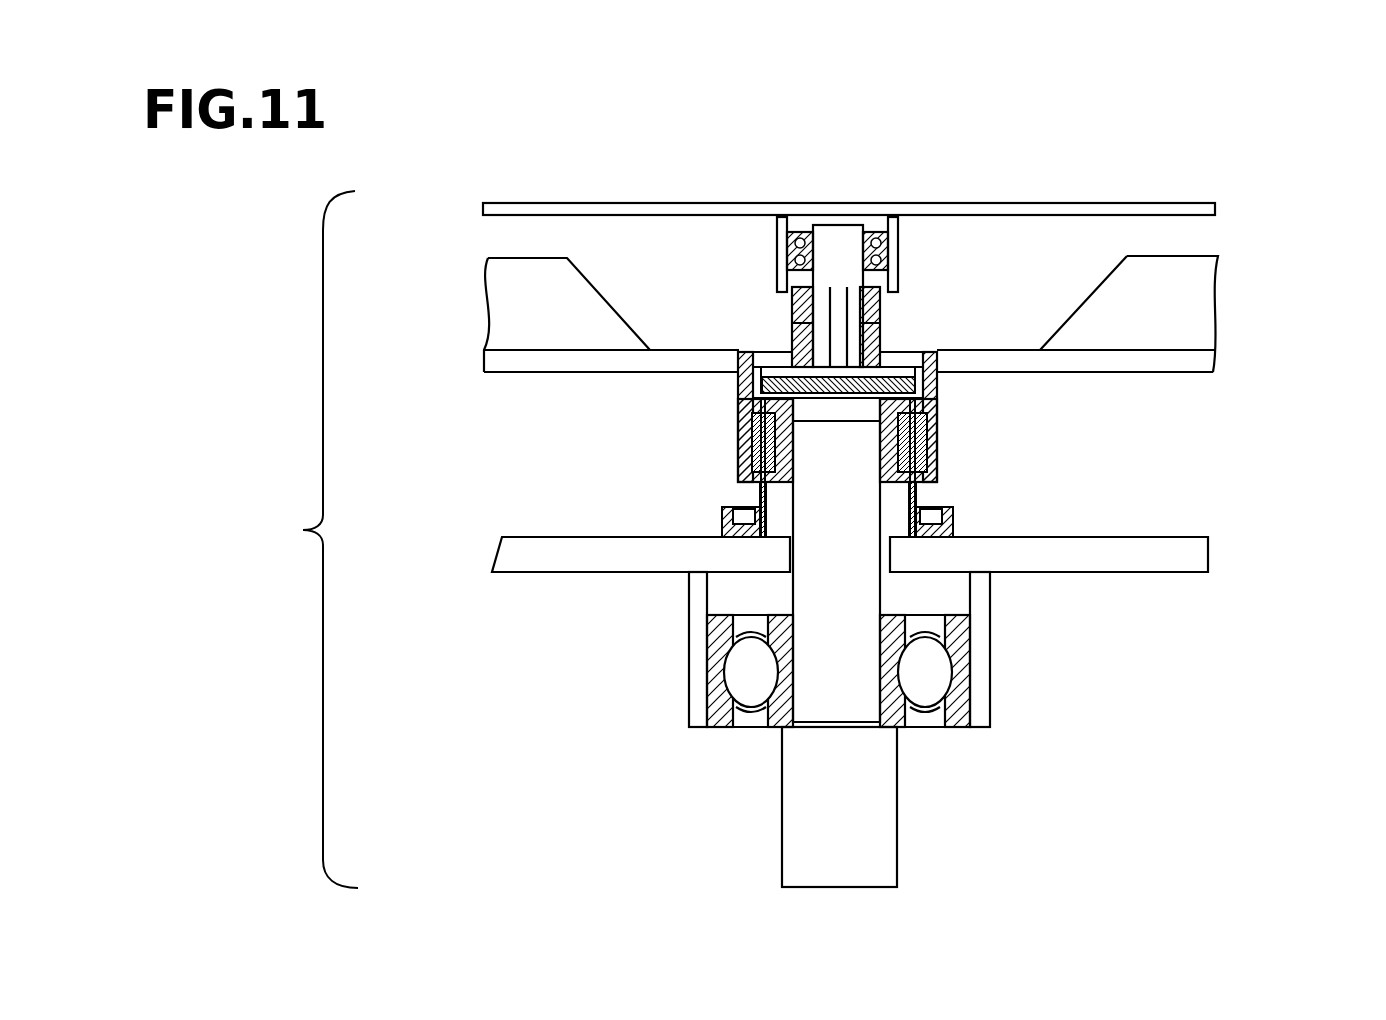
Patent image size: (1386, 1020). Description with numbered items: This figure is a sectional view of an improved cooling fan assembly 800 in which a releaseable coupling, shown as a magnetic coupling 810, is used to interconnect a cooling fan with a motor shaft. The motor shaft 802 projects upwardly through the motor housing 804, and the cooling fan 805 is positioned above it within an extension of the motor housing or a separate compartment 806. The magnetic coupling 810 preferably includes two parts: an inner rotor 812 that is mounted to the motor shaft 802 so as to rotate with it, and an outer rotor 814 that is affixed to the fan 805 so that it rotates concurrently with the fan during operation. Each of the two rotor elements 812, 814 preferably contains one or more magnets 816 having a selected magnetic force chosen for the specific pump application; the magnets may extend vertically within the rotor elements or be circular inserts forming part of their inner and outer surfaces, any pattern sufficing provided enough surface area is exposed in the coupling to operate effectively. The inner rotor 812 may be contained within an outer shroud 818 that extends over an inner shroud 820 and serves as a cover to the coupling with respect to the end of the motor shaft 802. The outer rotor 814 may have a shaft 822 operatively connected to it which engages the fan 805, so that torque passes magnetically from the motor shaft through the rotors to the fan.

The cooling fan assembly 800 is at (306, 539).
The motor shaft 802 is at (875, 817).
The motor housing 804 is at (1120, 557).
The cooling fan 805 is at (1190, 292).
The separate compartment 806 is at (1097, 465).
The magnetic coupling 810 is at (726, 430).
The inner rotor 812 is at (767, 407).
The outer rotor 814 is at (930, 392).
The magnets 816 is at (917, 457).
The outer shroud 818 is at (918, 395).
The inner shroud 820 is at (780, 378).
The shaft 822 is at (827, 323).